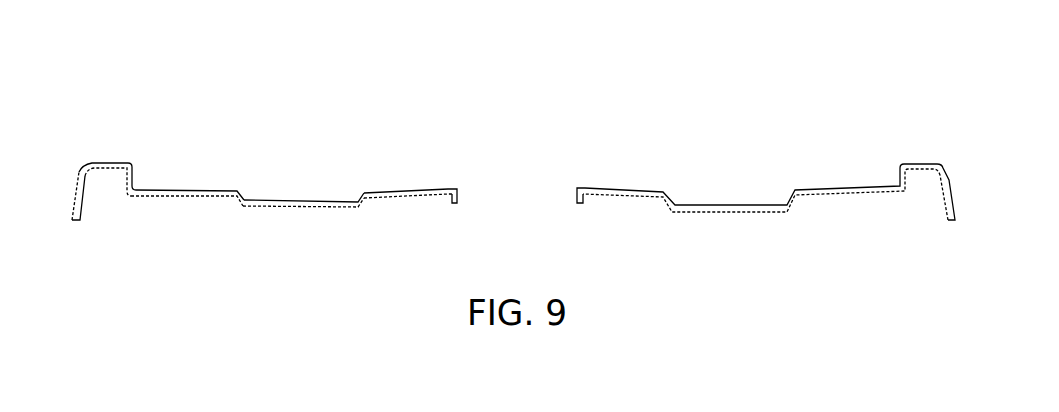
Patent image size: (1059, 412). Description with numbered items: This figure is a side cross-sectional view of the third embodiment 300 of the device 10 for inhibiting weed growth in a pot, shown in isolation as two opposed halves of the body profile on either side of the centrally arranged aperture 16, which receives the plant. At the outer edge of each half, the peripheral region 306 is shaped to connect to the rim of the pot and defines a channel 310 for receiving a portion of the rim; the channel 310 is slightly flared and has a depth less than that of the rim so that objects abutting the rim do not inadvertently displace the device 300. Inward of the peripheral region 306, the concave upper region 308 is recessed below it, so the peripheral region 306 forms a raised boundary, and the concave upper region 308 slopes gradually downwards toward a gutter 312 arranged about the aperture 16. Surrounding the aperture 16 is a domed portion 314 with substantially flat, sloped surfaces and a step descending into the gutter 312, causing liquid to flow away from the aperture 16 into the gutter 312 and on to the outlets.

The device 10 is at (173, 82).
The centrally arranged aperture 16 is at (523, 219).
The third embodiment 300 is at (840, 128).
The peripheral region 306 is at (105, 160).
The concave upper region 308 is at (188, 190).
The channel 310 is at (98, 231).
The gutter 312 is at (298, 200).
The domed portion 314 is at (397, 190).